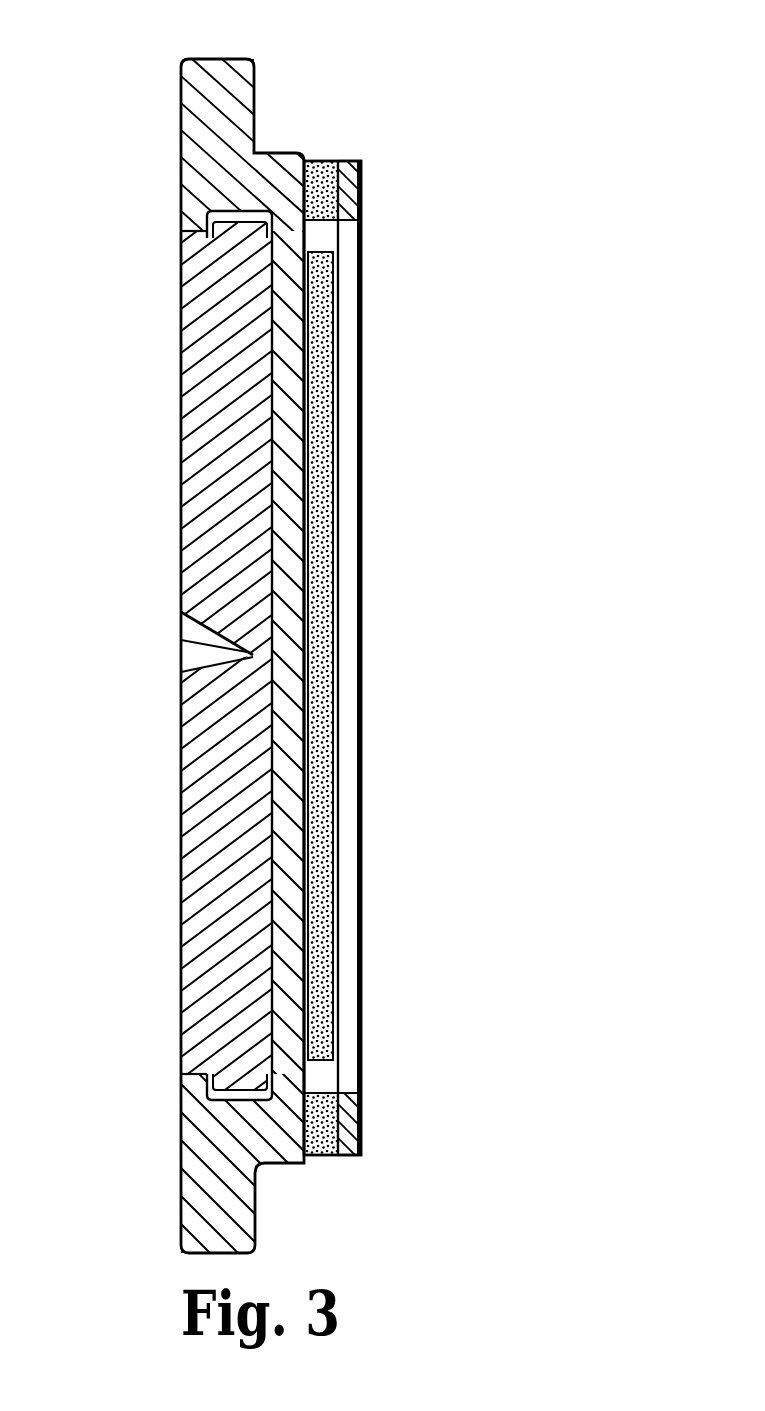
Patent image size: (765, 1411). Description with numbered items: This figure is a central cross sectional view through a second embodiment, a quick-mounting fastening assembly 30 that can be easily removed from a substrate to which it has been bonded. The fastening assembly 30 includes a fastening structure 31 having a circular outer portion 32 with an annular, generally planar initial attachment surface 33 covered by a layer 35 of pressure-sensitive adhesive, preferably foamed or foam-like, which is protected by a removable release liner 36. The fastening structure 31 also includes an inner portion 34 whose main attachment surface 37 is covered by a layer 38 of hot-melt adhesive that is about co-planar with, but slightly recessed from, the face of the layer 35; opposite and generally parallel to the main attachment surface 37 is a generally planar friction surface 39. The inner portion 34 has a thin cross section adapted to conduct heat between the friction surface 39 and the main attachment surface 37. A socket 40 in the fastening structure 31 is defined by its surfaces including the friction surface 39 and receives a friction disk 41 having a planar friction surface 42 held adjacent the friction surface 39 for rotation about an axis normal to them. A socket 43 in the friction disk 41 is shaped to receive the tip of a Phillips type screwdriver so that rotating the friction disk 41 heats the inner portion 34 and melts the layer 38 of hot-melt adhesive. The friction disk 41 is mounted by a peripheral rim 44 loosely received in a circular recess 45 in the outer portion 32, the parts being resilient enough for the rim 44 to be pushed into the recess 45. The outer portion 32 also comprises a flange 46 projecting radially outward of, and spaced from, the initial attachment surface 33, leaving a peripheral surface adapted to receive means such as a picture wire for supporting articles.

The quick-mounting fastening assembly 30 is at (120, 300).
The fastening structure 31 is at (173, 132).
The circular outer portion 32 is at (217, 58).
The initial attachment surface 33 is at (358, 207).
The inner portion 34 is at (302, 301).
The layer of pressure-sensitive adhesive 35 is at (328, 160).
The release liner 36 is at (359, 188).
The main attachment surface 37 is at (318, 622).
The layer of hot-melt adhesive 38 is at (318, 878).
The friction surface 39 is at (268, 820).
The socket 40 is at (243, 236).
The friction disk 41 is at (195, 910).
The planar friction surface 42 is at (275, 432).
The socket 43 is at (190, 630).
The peripheral rim 44 is at (207, 214).
The circular recess 45 is at (268, 1082).
The flange 46 is at (232, 1200).